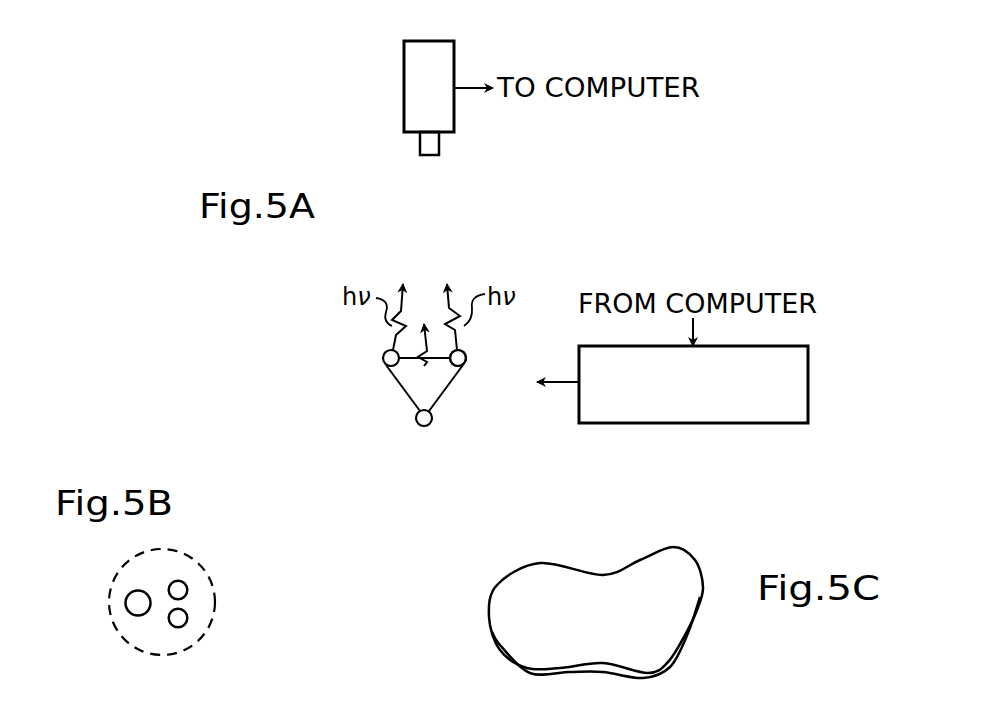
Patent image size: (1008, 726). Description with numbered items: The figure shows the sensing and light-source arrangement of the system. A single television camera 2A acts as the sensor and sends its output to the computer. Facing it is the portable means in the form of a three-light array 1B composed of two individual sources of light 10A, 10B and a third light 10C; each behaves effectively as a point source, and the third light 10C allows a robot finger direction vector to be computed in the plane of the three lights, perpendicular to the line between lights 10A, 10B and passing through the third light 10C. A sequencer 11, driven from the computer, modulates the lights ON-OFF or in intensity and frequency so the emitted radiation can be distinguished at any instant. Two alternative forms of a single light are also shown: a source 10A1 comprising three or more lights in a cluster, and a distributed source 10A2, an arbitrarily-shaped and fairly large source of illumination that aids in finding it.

In FIG. 5A, the television camera 2A is at (410, 68).
In FIG. 5B, the source of light 10A is at (383, 357).
In FIG. 5B, the source of light 10B is at (463, 364).
In FIG. 5B, the third light 10C is at (427, 426).
In FIG. 5B, the array 1B is at (470, 352).
In FIG. 5B, the sequencer 11 is at (680, 423).
In FIG. 5B, the source 10A1 is at (203, 638).
In FIG. 5C, the distributed source 10A2 is at (667, 622).